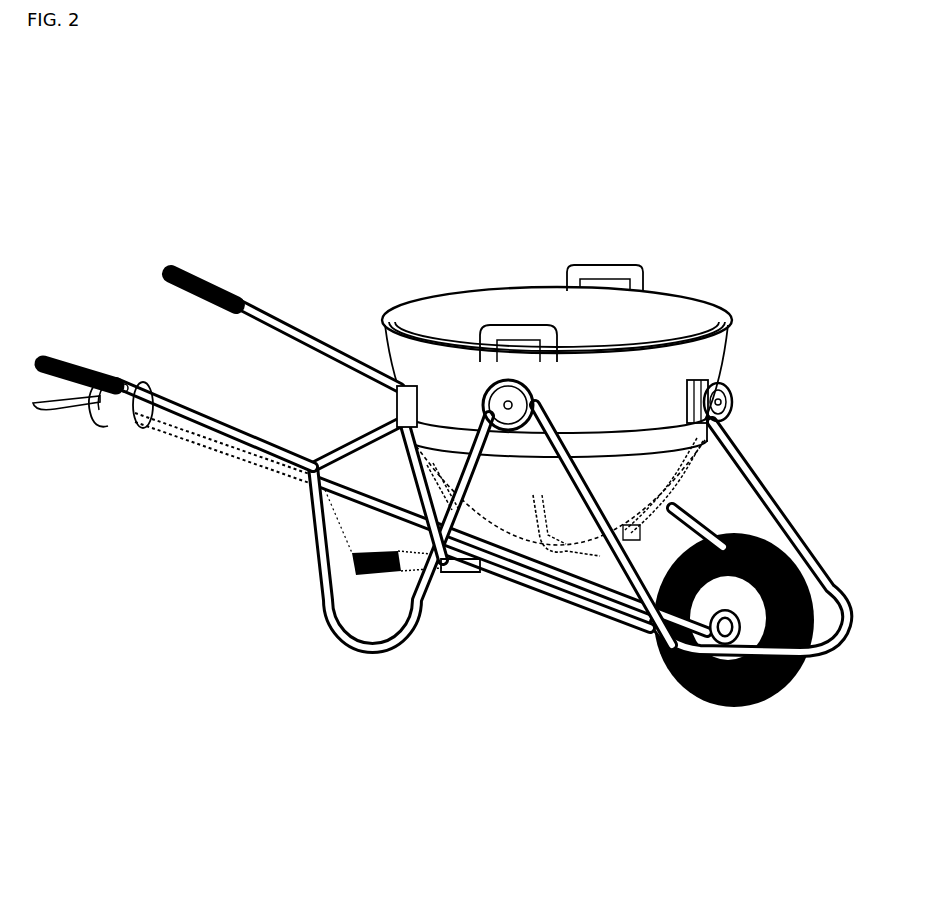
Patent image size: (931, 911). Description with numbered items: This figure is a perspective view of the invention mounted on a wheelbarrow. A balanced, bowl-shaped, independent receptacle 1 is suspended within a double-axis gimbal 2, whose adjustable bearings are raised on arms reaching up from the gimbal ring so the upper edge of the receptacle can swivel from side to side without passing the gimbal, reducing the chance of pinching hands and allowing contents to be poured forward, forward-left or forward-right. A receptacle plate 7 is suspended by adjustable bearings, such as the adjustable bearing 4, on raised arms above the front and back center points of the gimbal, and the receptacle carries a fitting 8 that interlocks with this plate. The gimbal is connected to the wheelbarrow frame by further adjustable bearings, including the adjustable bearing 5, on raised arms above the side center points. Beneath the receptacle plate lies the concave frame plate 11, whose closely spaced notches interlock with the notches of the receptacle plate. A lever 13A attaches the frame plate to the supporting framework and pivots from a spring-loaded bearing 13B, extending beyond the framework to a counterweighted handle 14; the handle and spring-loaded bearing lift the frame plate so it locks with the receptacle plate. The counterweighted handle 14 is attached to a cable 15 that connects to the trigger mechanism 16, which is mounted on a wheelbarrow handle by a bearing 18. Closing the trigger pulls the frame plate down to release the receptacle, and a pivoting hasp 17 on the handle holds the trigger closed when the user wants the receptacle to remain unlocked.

The receptacle 1 is at (483, 297).
The double-axis gimbal 2 is at (412, 427).
The adjustable bearing 4 is at (730, 392).
The adjustable bearing 5 is at (522, 400).
The receptacle plate 7 is at (688, 478).
The fitting 8 is at (708, 372).
The frame plate 11 is at (584, 558).
The lever 13A is at (473, 568).
The spring-loaded bearing 13B is at (438, 571).
The counterweighted handle 14 is at (372, 578).
The cable 15 is at (238, 464).
The trigger mechanism 16 is at (56, 413).
The pivoting hasp 17 is at (92, 430).
The bearing 18 is at (124, 386).